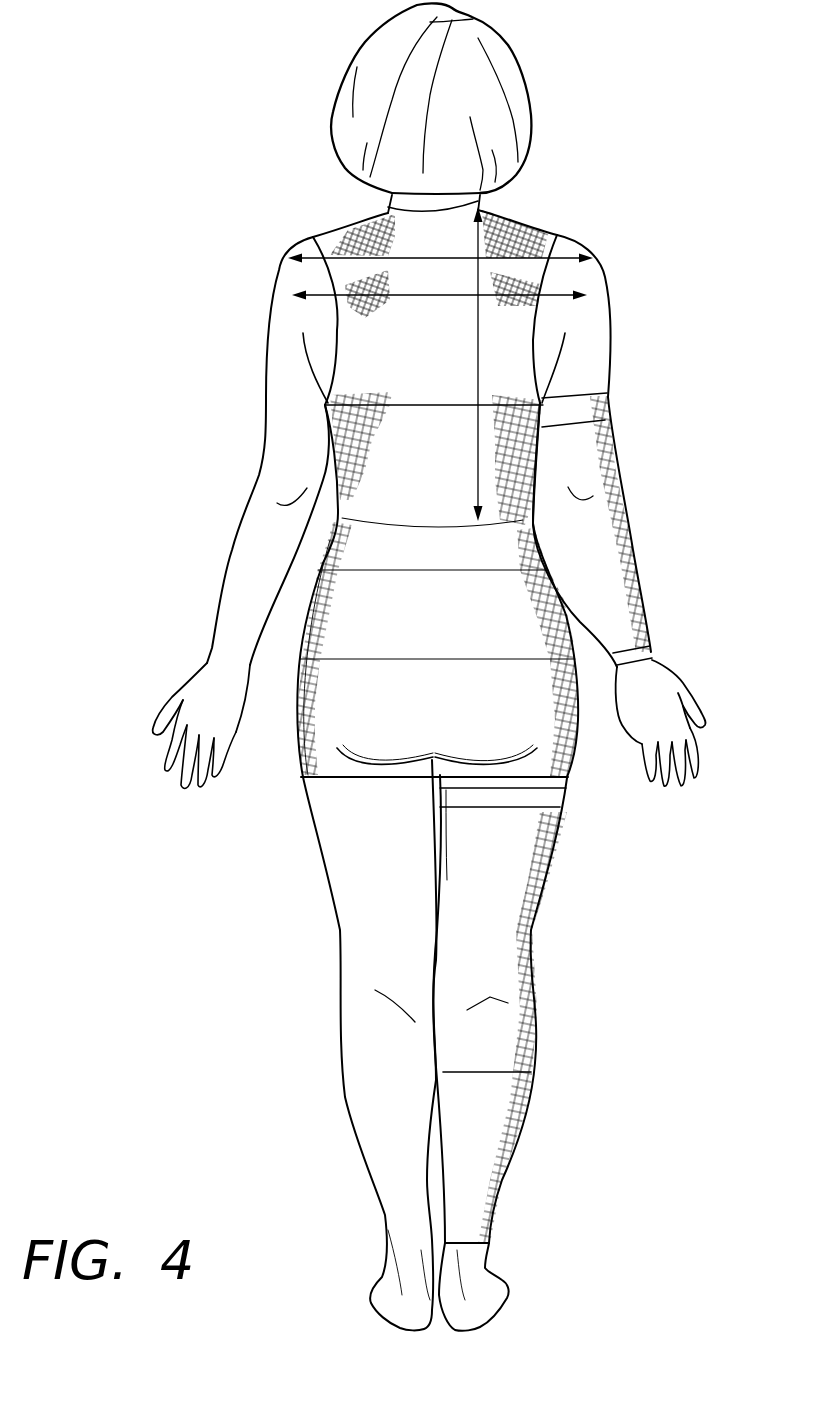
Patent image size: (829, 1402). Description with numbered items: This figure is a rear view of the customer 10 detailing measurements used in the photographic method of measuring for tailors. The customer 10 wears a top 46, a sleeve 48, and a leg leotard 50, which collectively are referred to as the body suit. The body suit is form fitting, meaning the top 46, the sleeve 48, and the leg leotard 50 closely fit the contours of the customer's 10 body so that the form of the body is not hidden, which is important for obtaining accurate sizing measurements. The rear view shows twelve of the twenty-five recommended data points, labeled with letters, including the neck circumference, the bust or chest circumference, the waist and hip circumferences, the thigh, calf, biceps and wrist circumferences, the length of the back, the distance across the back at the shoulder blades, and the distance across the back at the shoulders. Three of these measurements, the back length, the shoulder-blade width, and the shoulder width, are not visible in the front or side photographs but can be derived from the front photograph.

The customer 10 is at (210, 225).
The top 46 is at (448, 470).
The sleeve 48 is at (604, 558).
The leg leotard 50 is at (490, 915).